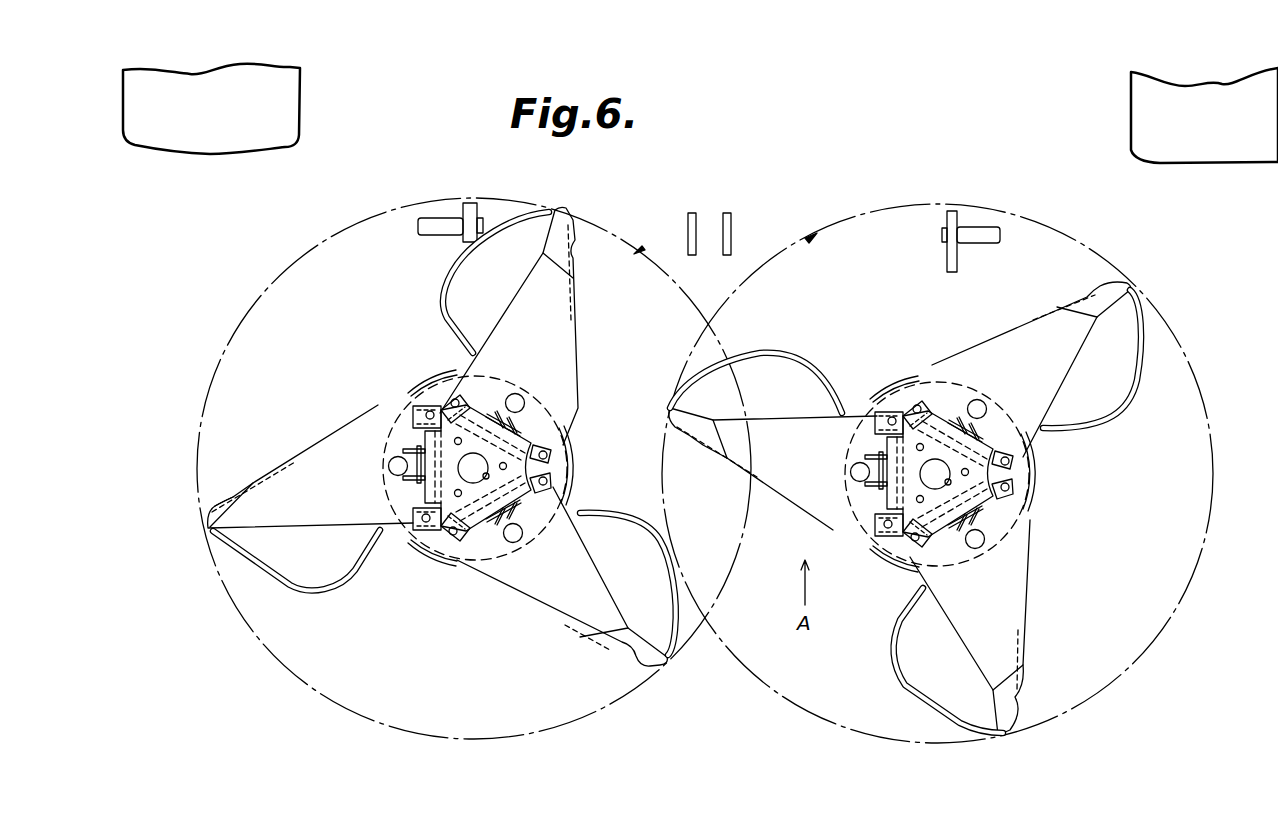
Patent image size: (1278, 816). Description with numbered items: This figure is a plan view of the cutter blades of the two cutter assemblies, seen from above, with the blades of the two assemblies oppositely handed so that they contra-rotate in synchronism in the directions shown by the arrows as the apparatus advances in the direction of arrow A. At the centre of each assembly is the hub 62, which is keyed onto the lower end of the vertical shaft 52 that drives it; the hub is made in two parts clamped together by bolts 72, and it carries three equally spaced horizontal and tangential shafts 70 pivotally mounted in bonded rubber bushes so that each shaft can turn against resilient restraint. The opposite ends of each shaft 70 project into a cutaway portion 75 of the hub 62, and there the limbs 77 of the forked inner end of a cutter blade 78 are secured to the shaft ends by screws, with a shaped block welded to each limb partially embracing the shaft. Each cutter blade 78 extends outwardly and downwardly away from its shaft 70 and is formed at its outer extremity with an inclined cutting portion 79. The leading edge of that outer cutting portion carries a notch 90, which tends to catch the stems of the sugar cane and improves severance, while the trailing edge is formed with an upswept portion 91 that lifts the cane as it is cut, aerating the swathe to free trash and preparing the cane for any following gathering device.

The vertical shaft 52 is at (427, 440).
The hub 62 is at (533, 443).
The horizontal tangential shaft 70 is at (550, 410).
The bolt 72 is at (550, 472).
The cutaway portion 75 is at (437, 403).
The limb 77 is at (470, 540).
The cutter blade 78 is at (338, 463).
The inclined cutting portion 79 is at (223, 517).
The notch 90 is at (235, 497).
The upswept portion 91 is at (320, 567).